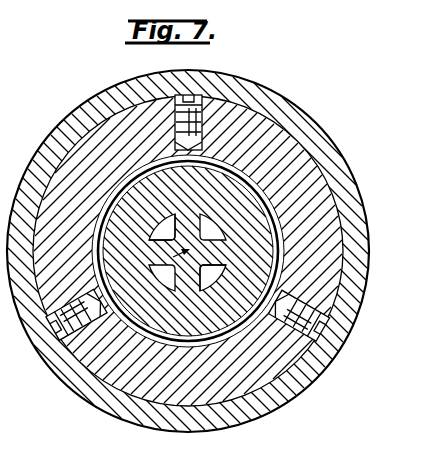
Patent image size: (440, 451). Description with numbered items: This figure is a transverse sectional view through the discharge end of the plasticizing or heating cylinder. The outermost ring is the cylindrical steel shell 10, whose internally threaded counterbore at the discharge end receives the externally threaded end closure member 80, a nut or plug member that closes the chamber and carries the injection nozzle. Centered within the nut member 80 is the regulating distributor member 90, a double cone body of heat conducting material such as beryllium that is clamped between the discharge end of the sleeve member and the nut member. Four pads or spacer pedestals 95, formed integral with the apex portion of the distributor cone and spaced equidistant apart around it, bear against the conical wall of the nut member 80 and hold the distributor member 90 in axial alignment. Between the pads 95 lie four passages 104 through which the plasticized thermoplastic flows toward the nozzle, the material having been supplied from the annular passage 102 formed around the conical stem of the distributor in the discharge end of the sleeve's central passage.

The shell 10 is at (310, 162).
The annular passage 102 is at (262, 124).
The end closure member 80 is at (252, 238).
The regulating distributor member 90 is at (163, 270).
The passages 104 is at (148, 220).
The pads 95 is at (212, 237).